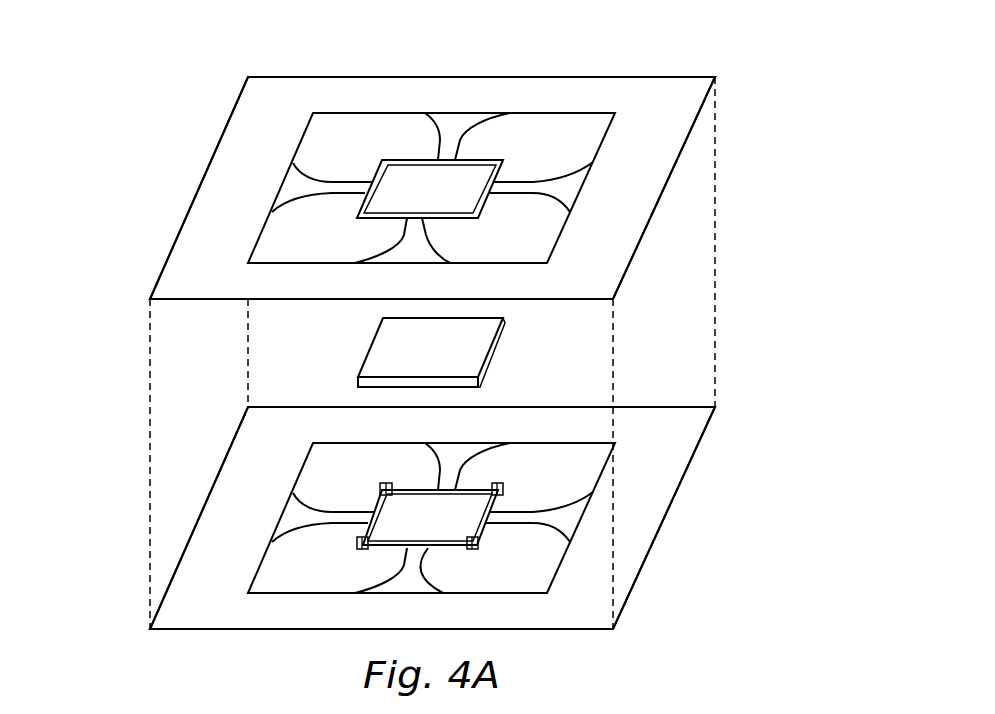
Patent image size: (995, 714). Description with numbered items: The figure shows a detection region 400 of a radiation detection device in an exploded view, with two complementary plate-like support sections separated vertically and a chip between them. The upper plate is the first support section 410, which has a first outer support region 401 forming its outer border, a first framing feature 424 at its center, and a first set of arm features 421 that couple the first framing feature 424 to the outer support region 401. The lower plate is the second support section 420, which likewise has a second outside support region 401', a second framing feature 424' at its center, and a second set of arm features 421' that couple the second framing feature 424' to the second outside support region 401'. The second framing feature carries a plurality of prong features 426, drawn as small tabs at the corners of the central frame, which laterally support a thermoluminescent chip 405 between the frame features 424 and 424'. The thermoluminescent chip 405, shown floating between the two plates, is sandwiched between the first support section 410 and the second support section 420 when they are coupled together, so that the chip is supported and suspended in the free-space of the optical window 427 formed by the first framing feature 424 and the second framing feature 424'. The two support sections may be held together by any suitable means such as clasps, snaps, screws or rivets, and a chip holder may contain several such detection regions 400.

The detection region 400 is at (152, 68).
The first outer support region 401 is at (440, 153).
The second outside support region 401' is at (462, 518).
The thermoluminescent chip 405 is at (358, 380).
The first support section 410 is at (758, 80).
The second support section 420 is at (680, 629).
The first set of arm features 421 is at (431, 139).
The second set of arm features 421' is at (487, 518).
The first framing feature 424 is at (467, 90).
The second framing feature 424' is at (513, 563).
The prong features 426 is at (497, 485).
The optical window 427 is at (452, 204).